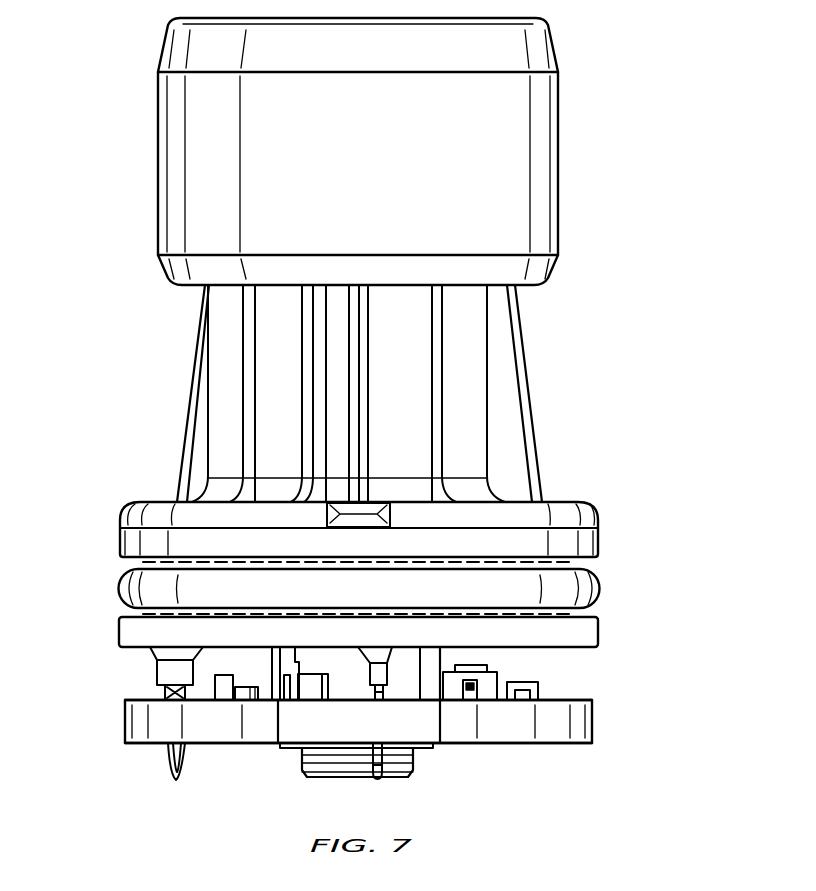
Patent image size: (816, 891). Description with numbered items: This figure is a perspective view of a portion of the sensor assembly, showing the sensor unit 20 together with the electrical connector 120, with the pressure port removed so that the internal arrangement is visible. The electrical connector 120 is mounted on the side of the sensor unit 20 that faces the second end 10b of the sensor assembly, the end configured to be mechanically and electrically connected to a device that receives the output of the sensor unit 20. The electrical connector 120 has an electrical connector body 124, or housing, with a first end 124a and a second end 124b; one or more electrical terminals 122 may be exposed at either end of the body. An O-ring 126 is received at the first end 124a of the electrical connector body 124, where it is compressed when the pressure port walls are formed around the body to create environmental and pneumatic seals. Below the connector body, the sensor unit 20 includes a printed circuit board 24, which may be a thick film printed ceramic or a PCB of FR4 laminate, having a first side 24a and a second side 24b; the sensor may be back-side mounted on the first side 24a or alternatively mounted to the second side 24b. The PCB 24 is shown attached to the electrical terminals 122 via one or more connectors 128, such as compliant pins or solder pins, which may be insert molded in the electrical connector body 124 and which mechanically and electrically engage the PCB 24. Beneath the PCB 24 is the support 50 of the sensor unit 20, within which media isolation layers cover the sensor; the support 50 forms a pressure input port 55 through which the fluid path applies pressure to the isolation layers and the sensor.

The second end of the sensor assembly 10b is at (361, 345).
The second end of the electrical connector body 124b is at (140, 44).
The electrical connector 120 is at (345, 423).
The electrical connector body 124 is at (521, 379).
The O-ring 126 is at (584, 587).
The first end of the electrical connector body 124a is at (560, 648).
The sensor unit 20 is at (351, 731).
The printed circuit board 24 is at (387, 706).
The second side of the PCB 24b is at (562, 700).
The first side of the PCB 24a is at (563, 745).
The electrical terminals 122 is at (167, 672).
The connectors 128 is at (168, 772).
The support 50 is at (304, 773).
The pressure input port 55 is at (359, 786).